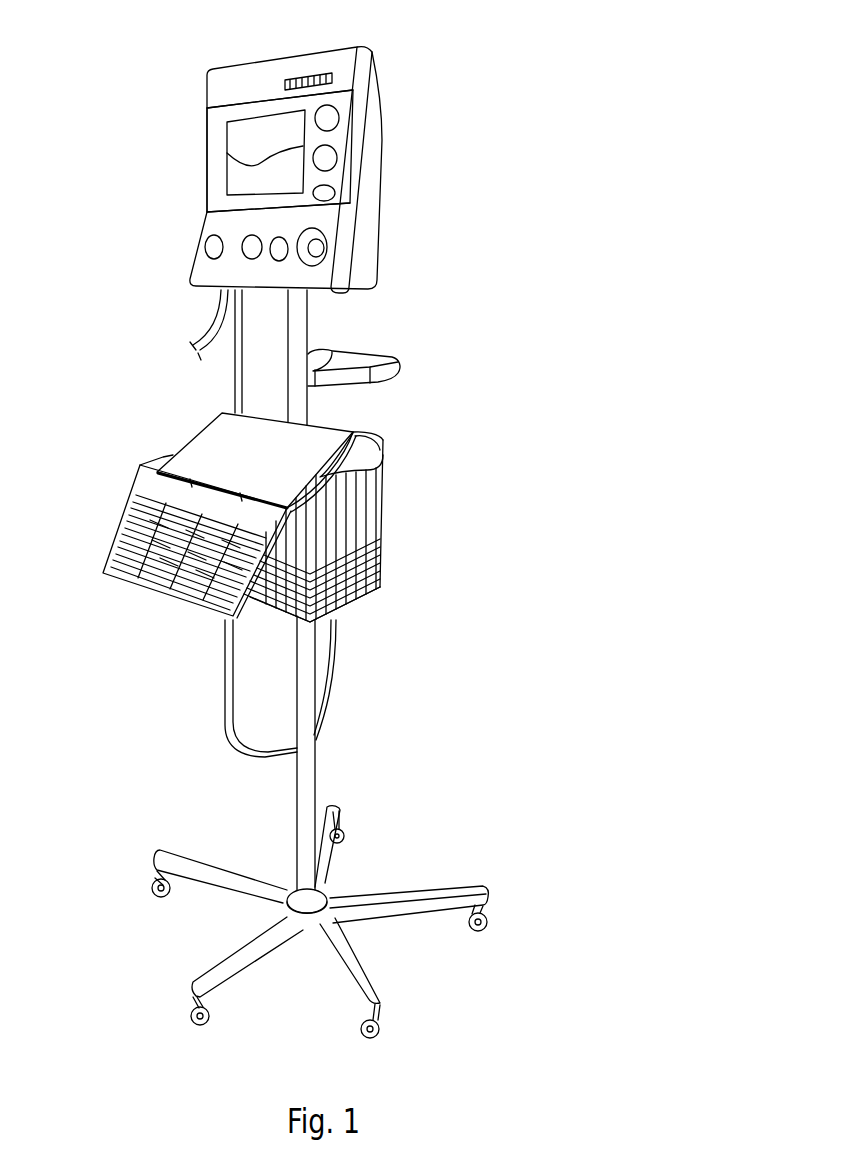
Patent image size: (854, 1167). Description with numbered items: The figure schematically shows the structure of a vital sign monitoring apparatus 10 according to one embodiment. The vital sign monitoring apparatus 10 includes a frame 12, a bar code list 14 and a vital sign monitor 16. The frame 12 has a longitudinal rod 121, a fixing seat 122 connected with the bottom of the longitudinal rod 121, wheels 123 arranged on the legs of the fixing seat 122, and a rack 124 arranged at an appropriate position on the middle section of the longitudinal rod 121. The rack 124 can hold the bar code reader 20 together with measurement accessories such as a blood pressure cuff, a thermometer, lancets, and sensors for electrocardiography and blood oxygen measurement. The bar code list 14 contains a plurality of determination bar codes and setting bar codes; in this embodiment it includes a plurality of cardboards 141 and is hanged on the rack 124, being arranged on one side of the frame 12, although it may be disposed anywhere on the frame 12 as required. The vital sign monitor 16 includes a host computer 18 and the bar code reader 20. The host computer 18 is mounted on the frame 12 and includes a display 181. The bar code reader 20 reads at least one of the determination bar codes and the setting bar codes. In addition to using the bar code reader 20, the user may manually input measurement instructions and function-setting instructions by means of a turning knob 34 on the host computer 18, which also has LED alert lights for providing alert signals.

The vital sign monitoring apparatus 10 is at (510, 30).
The frame 12 is at (315, 768).
The longitudinal rod 121 is at (308, 792).
The fixing seat 122 is at (407, 910).
The wheels 123 is at (491, 921).
The rack 124 is at (380, 533).
The bar code list 14 is at (151, 592).
The cardboards 141 is at (117, 560).
The vital sign monitor 16 is at (379, 203).
The host computer 18 is at (362, 117).
The display 181 is at (247, 142).
The bar code reader 20 is at (380, 443).
The turning knob 34 is at (318, 248).